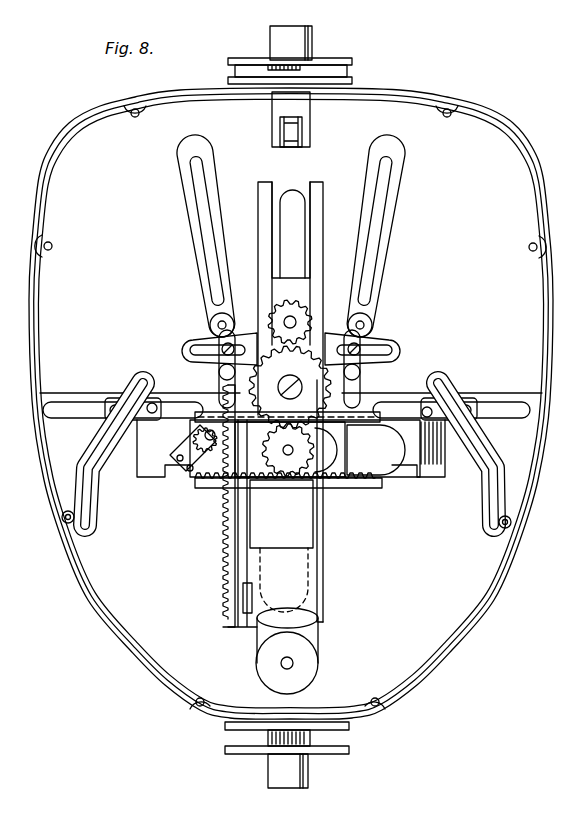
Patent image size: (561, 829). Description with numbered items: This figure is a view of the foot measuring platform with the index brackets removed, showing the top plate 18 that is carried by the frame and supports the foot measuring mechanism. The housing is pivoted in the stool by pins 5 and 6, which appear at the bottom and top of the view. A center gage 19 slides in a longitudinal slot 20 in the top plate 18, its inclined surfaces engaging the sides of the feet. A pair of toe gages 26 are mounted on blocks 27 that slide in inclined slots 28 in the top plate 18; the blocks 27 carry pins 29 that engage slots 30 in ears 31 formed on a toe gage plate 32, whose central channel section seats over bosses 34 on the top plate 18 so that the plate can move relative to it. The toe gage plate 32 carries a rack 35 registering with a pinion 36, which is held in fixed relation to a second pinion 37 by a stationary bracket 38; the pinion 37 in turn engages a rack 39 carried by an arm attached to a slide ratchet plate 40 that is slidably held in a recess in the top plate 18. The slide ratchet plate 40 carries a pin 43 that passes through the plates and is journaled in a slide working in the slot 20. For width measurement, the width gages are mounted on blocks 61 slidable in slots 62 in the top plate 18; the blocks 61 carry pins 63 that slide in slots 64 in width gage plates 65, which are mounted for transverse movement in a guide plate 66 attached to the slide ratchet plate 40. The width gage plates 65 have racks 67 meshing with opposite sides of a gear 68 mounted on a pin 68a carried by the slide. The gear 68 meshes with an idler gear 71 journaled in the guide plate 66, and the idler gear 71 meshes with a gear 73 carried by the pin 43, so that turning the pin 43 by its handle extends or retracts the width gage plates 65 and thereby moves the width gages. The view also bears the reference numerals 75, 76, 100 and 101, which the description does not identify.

The pin 5 is at (335, 744).
The pin 6 is at (273, 66).
The top plate 18 is at (115, 595).
The center gage 19 is at (62, 540).
The longitudinal slot 20 is at (292, 245).
The toe gages 26 is at (380, 205).
The blocks 27 is at (218, 321).
The inclined slots 28 is at (203, 228).
The pins 29 is at (226, 344).
The slots 30 is at (195, 350).
The ears 31 is at (238, 345).
The toe gage plate 32 is at (300, 577).
The bosses 34 is at (268, 215).
The rack 35 is at (228, 594).
The pinion 36 is at (230, 481).
The pinion 37 is at (182, 442).
The stationary bracket 38 is at (188, 458).
The rack 39 is at (225, 540).
The slide ratchet plate 40 is at (316, 286).
The pin 43 is at (286, 312).
The blocks 61 is at (113, 403).
The slots 62 is at (176, 410).
The pins 63 is at (110, 411).
The slots 64 is at (100, 455).
The width gage plates 65 is at (283, 448).
The guide plate 66 is at (222, 484).
The racks 67 is at (278, 536).
The gear 68 is at (300, 456).
The pin 68a is at (288, 456).
The idler gear 71 is at (290, 387).
The gear 73 is at (302, 322).
The lever lower end 75 is at (92, 516).
The slotted lever 76 is at (140, 381).
The inner block 100 is at (297, 132).
The guide box 101 is at (278, 102).